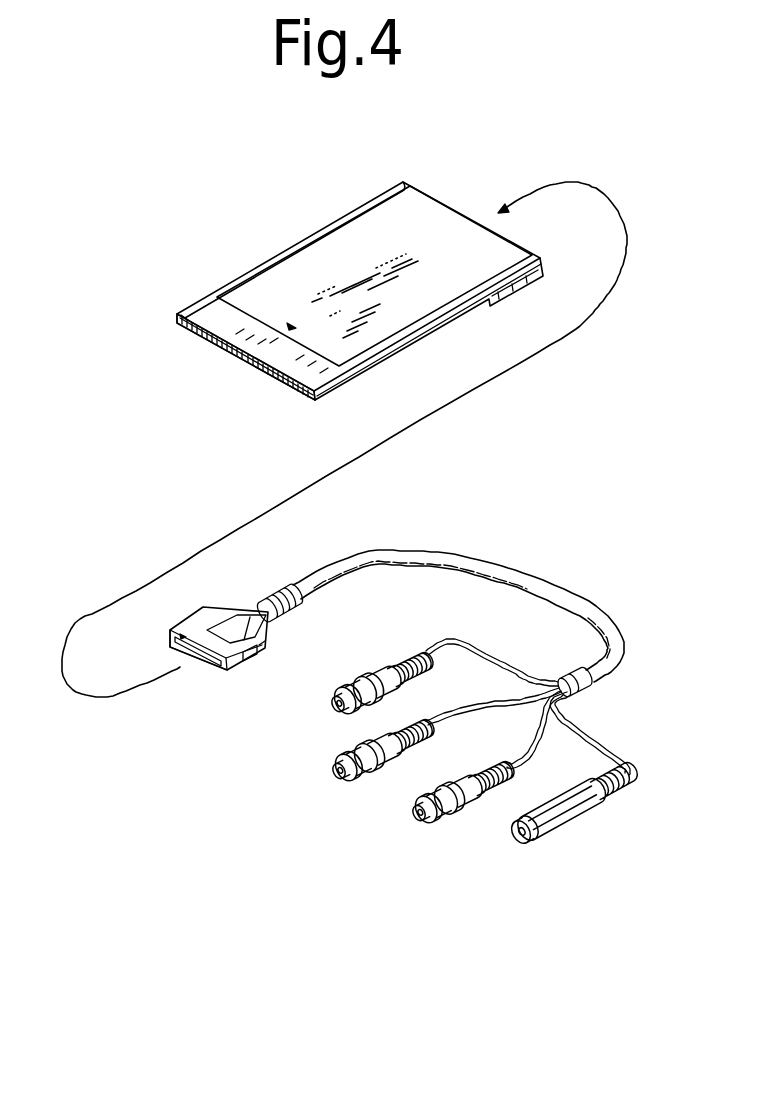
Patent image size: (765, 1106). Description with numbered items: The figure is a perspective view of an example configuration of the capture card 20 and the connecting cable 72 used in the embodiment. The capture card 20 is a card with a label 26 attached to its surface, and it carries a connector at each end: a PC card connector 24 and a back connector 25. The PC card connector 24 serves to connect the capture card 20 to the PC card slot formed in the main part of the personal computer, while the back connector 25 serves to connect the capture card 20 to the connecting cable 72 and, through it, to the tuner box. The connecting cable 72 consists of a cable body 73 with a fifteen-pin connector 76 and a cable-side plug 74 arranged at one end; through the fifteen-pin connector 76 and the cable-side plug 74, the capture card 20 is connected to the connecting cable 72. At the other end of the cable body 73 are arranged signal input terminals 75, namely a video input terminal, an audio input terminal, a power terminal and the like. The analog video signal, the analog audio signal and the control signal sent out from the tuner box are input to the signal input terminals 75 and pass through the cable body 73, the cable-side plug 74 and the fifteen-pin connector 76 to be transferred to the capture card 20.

The capture card 20 is at (330, 193).
The PC card connector 24 is at (200, 341).
The back connector 25 is at (446, 200).
The label 26 is at (332, 281).
The connecting cable 72 is at (520, 543).
The cable body 73 is at (401, 550).
The cable-side plug 74 is at (209, 613).
The signal input terminals 75 is at (423, 840).
The 15-pin connector 76 is at (196, 676).